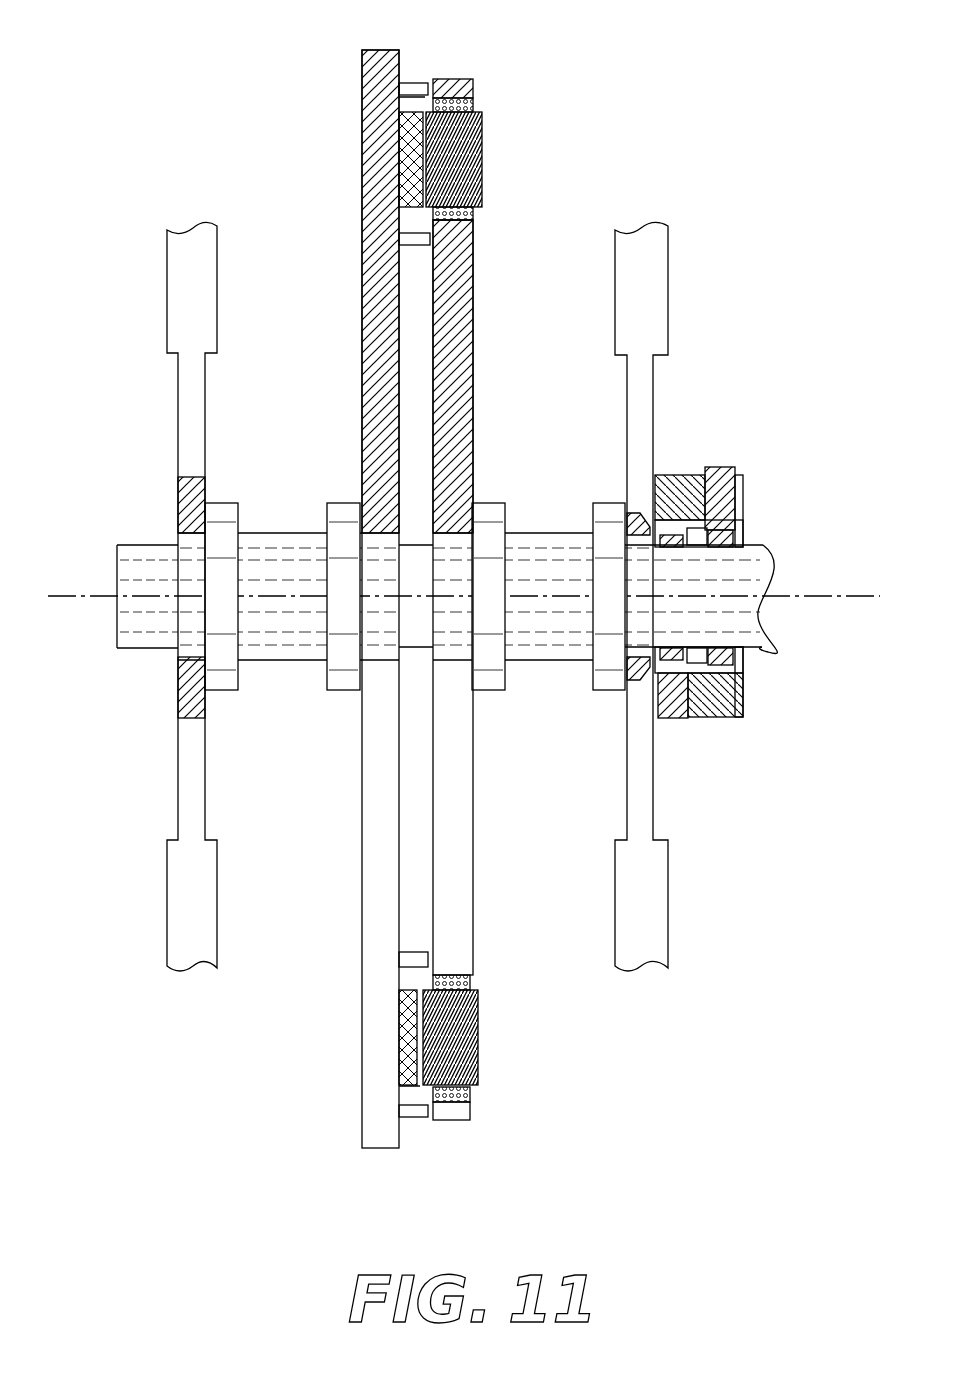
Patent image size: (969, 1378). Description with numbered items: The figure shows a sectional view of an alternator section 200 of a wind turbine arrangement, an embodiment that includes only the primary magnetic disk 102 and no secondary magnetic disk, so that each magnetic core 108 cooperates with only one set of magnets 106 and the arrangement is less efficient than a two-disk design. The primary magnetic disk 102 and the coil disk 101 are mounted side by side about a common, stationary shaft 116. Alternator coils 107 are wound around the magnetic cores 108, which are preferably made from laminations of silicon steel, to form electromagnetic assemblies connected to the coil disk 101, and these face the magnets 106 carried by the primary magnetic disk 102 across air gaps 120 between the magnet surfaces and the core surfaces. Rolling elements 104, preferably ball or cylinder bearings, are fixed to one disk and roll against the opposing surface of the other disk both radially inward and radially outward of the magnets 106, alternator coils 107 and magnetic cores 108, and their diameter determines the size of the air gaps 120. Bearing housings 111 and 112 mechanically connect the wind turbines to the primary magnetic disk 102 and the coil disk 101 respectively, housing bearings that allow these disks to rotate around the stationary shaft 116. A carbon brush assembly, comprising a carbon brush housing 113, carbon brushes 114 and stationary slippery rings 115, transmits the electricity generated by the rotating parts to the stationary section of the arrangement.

The coil disk 101 is at (467, 81).
The primary magnetic disk 102 is at (362, 166).
The rolling elements 104 is at (420, 82).
The magnets 106 is at (418, 206).
The alternator coils 107 is at (475, 107).
The magnetic cores 108 is at (481, 151).
The bearing housing 111 is at (268, 535).
The bearing housing 112 is at (571, 535).
The carbon brush housing 113 is at (664, 474).
The carbon brushes 114 is at (720, 468).
The stationary slippery rings 115 is at (728, 657).
The stationary shaft 116 is at (753, 544).
The air gaps 120 is at (422, 107).
The alternator section 200 is at (306, 1059).